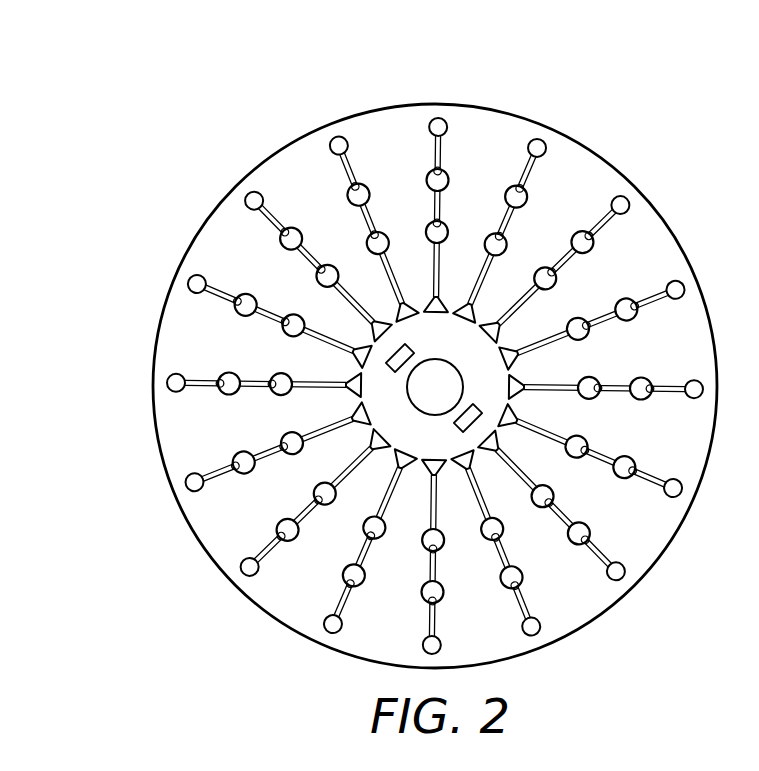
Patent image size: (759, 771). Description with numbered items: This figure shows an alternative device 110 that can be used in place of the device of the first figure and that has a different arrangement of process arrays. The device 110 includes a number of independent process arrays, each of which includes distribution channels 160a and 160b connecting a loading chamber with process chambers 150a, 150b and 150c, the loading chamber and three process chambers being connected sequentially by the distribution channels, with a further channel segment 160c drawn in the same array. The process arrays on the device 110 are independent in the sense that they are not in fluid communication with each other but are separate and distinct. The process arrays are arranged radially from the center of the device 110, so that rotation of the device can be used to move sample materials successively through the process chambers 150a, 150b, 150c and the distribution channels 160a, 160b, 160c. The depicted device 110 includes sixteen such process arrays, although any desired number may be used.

The device 110 is at (183, 143).
The process chamber 150a is at (508, 265).
The process chamber 150b is at (528, 205).
The process chamber 150c is at (545, 153).
The distribution channel 160a is at (477, 282).
The distribution channel 160b is at (500, 218).
The third shaft segment 160c is at (528, 170).